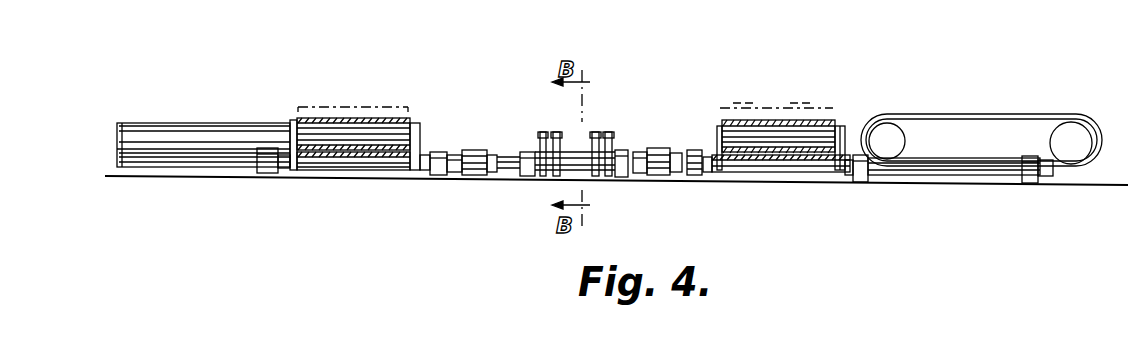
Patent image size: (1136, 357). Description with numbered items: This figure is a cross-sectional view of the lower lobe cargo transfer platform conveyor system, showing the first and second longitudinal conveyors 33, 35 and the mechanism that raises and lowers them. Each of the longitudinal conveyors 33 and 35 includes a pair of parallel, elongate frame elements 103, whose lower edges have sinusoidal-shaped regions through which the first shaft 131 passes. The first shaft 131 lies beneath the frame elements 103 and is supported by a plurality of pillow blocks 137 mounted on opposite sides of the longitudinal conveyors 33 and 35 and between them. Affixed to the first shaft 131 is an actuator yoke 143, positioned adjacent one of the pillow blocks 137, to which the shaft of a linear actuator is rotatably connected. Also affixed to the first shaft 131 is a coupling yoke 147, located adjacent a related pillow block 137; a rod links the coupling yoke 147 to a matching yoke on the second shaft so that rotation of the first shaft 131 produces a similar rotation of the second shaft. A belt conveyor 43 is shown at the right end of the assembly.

The first longitudinal conveyor 33 is at (757, 104).
The second longitudinal conveyor 35 is at (365, 104).
The belt conveyor 43 is at (982, 115).
The frame element 103 is at (713, 126).
The first shaft 131 is at (506, 158).
The pillow block 137 is at (268, 176).
The actuator yoke 143 is at (560, 140).
The coupling yoke 147 is at (612, 138).